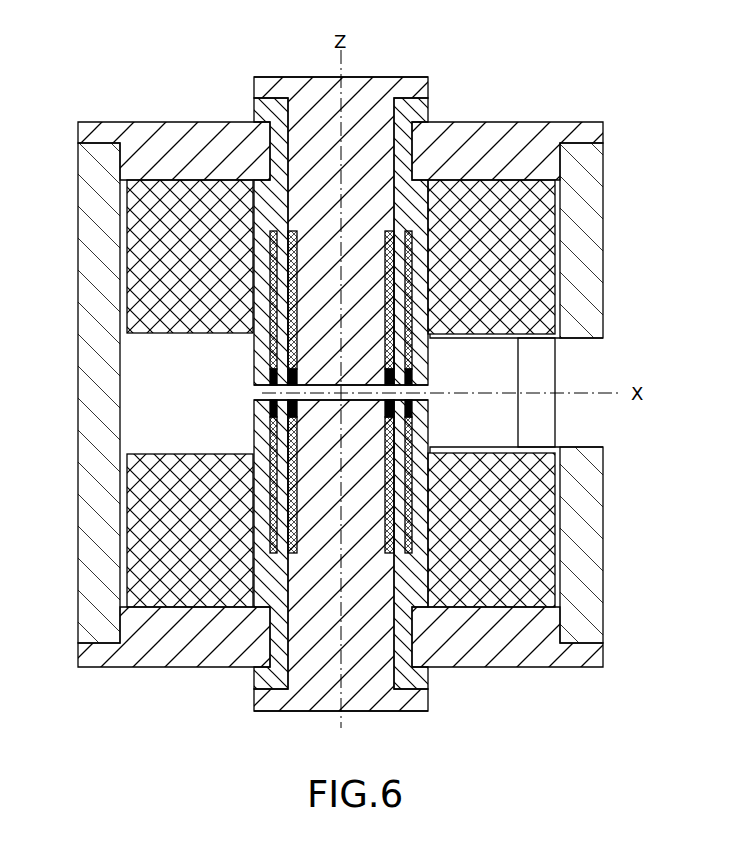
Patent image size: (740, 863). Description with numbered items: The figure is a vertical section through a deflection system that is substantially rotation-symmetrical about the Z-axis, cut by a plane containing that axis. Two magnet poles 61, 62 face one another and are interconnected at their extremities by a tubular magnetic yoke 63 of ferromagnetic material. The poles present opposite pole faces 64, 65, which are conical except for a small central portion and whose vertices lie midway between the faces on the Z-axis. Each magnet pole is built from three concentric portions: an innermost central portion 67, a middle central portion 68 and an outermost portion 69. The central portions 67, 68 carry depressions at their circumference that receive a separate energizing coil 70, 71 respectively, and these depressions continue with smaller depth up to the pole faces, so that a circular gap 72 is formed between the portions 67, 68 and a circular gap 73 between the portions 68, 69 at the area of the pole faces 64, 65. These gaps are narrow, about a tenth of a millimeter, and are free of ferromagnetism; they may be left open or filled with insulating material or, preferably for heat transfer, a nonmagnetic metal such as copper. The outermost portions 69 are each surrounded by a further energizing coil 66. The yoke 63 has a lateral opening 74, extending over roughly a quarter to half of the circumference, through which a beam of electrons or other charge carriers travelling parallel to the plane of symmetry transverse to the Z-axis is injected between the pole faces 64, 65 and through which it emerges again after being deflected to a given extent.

The magnet pole 61 is at (306, 59).
The magnet pole 62 is at (302, 728).
The tubular magnetic yoke 63 is at (94, 396).
The pole face 64 is at (308, 385).
The pole face 65 is at (306, 400).
The energizing coil 66 is at (142, 208).
The central portion of magnet pole 67 is at (384, 86).
The central portion of magnet pole 68 is at (404, 158).
The outermost portion of magnet pole 69 is at (418, 220).
The energizing coil 70 is at (293, 280).
The energizing coil 71 is at (274, 250).
The circular gap 72 is at (406, 371).
The circular gap 73 is at (394, 377).
The lateral opening 74 is at (585, 365).